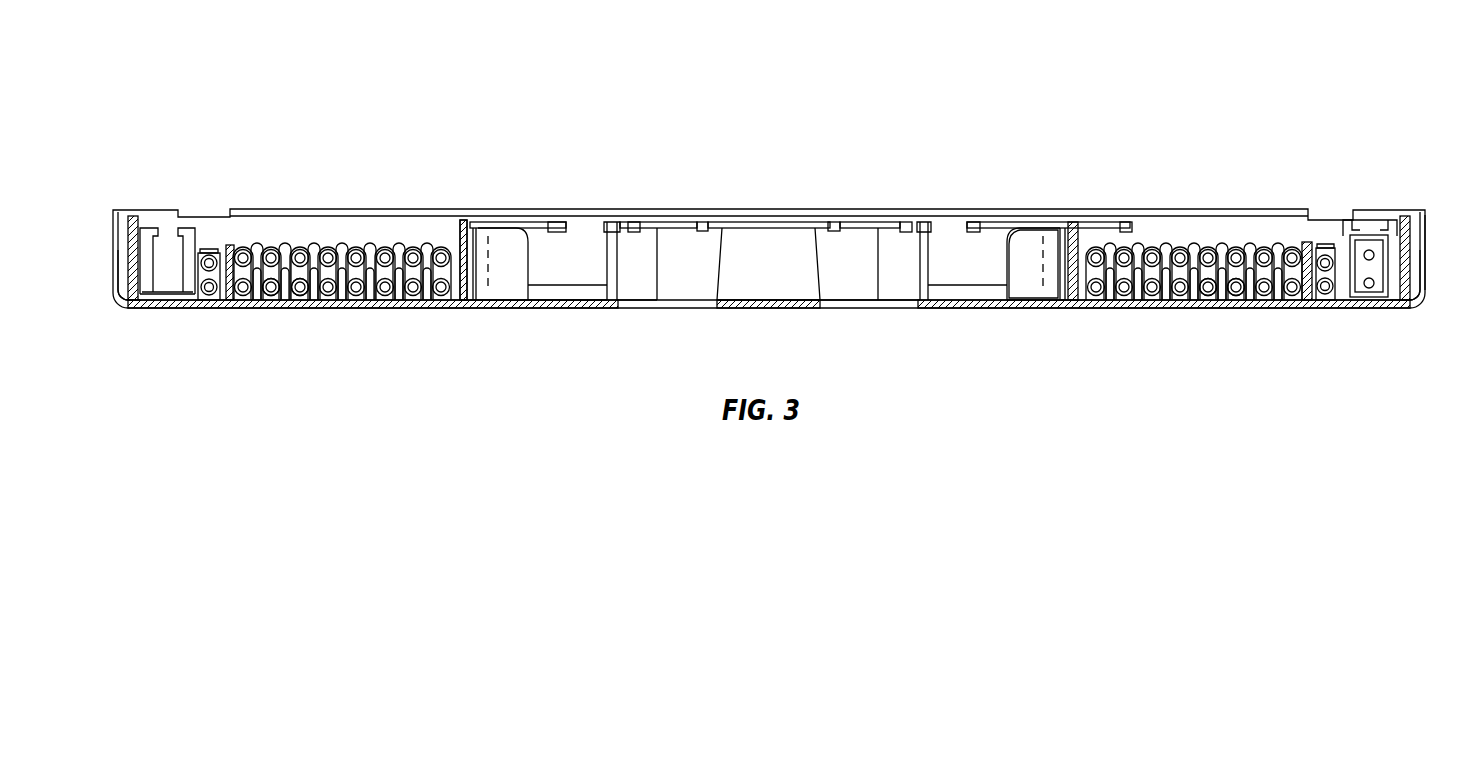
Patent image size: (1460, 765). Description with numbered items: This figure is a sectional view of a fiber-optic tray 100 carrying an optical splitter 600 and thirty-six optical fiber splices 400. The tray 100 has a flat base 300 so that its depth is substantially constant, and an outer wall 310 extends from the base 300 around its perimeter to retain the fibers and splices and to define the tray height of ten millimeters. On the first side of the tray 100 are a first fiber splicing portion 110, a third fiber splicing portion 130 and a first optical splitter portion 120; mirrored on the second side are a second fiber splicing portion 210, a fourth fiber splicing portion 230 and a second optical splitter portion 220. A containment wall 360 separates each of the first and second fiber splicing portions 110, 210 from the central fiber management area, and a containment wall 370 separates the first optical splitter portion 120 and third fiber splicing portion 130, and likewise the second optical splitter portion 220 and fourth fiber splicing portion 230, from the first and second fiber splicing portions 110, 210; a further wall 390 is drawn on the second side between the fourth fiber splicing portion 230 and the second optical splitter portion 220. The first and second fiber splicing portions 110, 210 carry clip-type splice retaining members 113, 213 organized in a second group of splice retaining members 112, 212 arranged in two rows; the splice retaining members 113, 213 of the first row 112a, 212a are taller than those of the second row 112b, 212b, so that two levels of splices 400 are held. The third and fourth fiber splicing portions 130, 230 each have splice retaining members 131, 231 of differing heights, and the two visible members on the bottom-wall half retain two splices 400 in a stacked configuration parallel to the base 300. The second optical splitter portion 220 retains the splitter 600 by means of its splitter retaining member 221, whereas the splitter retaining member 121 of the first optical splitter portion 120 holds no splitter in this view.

The tray 100 is at (795, 70).
The first fiber splicing portion 110 is at (328, 264).
The second group of splice retaining members 112 is at (470, 270).
The first row 112a is at (434, 244).
The second row 112b is at (361, 246).
The splice retaining member 113 is at (284, 247).
The first optical splitter portion 120 is at (158, 296).
The splitter retaining member 121 is at (188, 230).
The third fiber splicing portion 130 is at (208, 305).
The splice retaining member 131 is at (214, 250).
The second fiber splicing portion 210 is at (1199, 263).
The second group of splice retaining members 212 is at (1040, 303).
The first row 212a is at (1228, 246).
The second row 212b is at (1272, 246).
The splice retaining member 213 is at (1158, 246).
The second optical splitter portion 220 is at (1383, 305).
The splitter retaining member 221 is at (1392, 228).
The fourth fiber splicing portion 230 is at (1324, 303).
The splice retaining member 231 is at (1330, 245).
The base 300 is at (586, 310).
The outer wall 310 is at (1430, 240).
The containment wall 360 is at (465, 305).
The containment wall 370 is at (231, 308).
The partition wall 390 is at (1307, 303).
The optical fiber splice 400 is at (302, 305).
The optical splitter 600 is at (1362, 296).